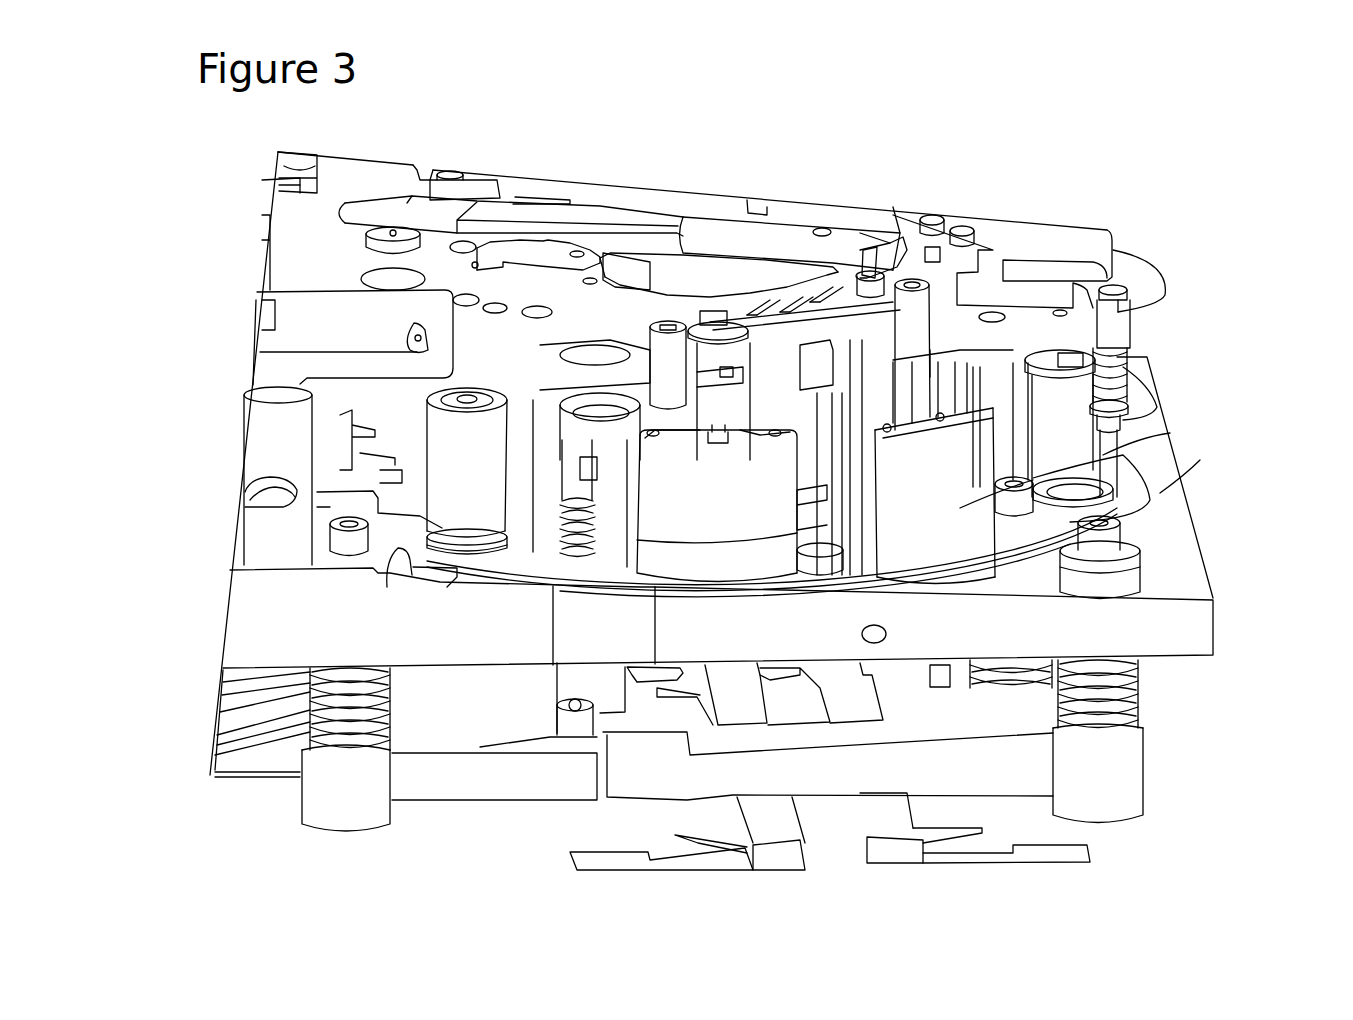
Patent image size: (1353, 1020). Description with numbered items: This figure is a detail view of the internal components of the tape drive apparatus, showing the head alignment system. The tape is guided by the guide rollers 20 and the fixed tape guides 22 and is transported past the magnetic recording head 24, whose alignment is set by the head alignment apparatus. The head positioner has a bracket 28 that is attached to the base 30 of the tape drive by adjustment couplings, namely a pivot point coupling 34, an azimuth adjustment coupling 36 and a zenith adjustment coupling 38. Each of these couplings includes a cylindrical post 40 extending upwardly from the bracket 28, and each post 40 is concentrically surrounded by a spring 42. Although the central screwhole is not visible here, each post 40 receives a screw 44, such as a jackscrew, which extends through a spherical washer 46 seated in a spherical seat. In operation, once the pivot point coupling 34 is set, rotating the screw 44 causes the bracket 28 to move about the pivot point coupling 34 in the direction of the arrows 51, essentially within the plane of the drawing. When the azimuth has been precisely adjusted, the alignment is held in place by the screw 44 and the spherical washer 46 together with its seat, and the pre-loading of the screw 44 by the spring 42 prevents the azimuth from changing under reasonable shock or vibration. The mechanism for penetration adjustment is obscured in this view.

The guide rollers 20 is at (460, 442).
The fixed tape guides 22 is at (733, 475).
The magnetic recording head 24 is at (845, 368).
The bracket 28 is at (432, 785).
The base 30 is at (1207, 622).
The pivot point coupling 34 is at (1050, 597).
The azimuth adjustment coupling 36 is at (322, 592).
The zenith adjustment coupling 38 is at (995, 693).
The cylindrical post 40 is at (337, 697).
The spring 42 is at (332, 752).
The screw 44 is at (330, 528).
The spherical washer 46 is at (340, 557).
The arrows 51 is at (160, 617).